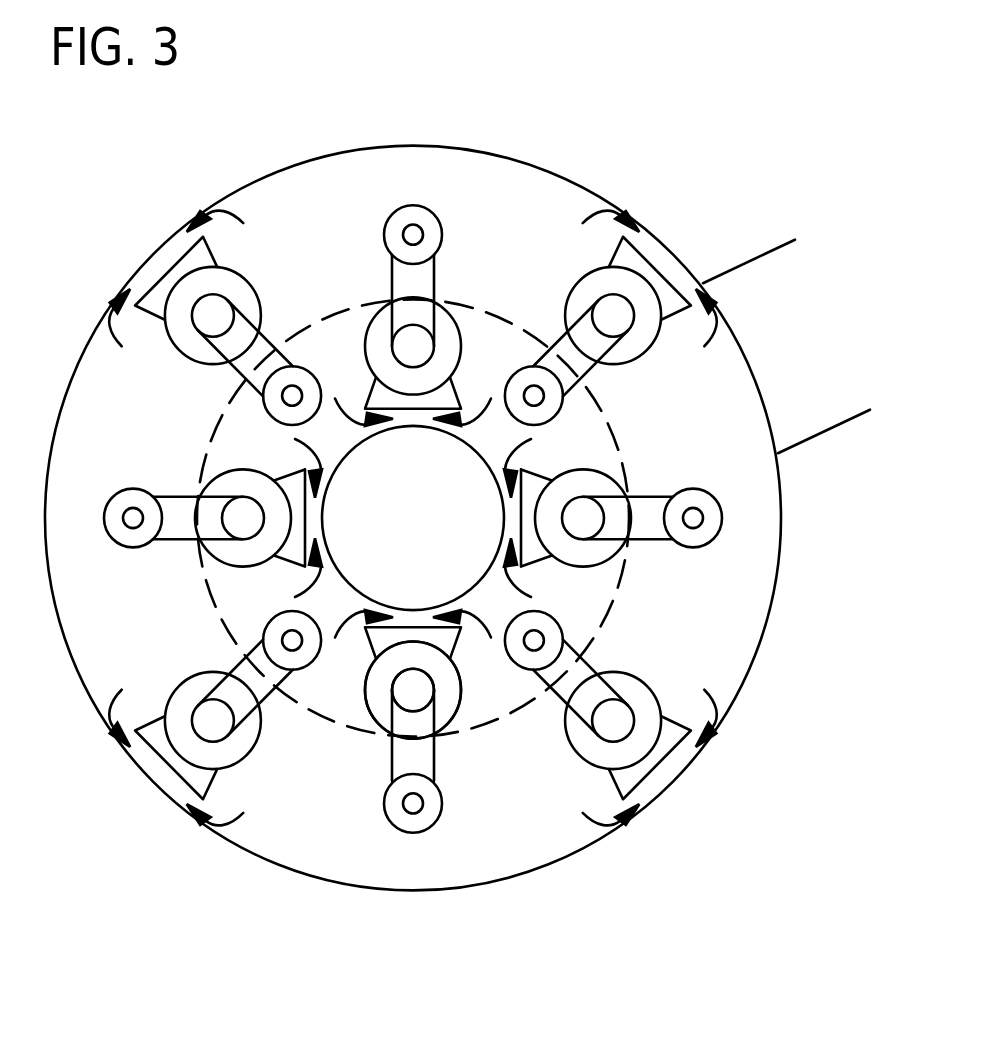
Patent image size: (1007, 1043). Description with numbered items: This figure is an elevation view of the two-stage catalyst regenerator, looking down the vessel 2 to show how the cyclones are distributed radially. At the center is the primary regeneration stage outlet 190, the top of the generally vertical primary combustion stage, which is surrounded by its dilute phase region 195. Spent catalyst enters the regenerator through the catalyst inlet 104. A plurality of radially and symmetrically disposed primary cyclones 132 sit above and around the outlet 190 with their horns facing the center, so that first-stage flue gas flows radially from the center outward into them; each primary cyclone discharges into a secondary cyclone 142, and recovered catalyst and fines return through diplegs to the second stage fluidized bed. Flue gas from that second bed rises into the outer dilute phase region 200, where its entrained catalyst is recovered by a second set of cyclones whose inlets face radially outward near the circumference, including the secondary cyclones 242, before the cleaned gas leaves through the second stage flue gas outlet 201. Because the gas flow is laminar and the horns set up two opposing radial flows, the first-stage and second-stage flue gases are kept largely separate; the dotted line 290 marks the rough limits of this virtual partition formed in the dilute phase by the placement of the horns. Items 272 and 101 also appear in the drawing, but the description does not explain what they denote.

The vessel 2 is at (413, 518).
The catalyst inlet 104 is at (786, 369).
The primary cyclones 132 is at (519, 517).
The secondary cyclones 142 is at (571, 373).
The primary regeneration stage outlet 190 is at (413, 518).
The dilute phase region 195 is at (255, 461).
The dilute phase region 200 is at (216, 314).
The second stage flue gas outlet 201 is at (559, 627).
The secondary cyclones 242 is at (552, 411).
The outer pivot 272 is at (634, 335).
The dotted line 290 is at (372, 517).
The arm end roller 101 is at (133, 490).